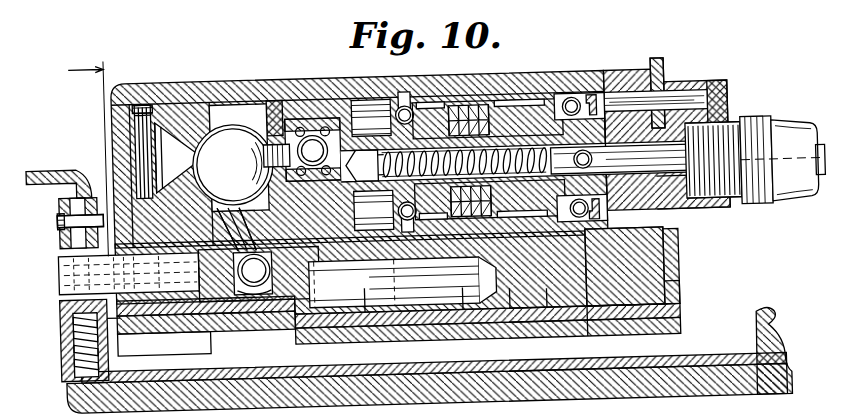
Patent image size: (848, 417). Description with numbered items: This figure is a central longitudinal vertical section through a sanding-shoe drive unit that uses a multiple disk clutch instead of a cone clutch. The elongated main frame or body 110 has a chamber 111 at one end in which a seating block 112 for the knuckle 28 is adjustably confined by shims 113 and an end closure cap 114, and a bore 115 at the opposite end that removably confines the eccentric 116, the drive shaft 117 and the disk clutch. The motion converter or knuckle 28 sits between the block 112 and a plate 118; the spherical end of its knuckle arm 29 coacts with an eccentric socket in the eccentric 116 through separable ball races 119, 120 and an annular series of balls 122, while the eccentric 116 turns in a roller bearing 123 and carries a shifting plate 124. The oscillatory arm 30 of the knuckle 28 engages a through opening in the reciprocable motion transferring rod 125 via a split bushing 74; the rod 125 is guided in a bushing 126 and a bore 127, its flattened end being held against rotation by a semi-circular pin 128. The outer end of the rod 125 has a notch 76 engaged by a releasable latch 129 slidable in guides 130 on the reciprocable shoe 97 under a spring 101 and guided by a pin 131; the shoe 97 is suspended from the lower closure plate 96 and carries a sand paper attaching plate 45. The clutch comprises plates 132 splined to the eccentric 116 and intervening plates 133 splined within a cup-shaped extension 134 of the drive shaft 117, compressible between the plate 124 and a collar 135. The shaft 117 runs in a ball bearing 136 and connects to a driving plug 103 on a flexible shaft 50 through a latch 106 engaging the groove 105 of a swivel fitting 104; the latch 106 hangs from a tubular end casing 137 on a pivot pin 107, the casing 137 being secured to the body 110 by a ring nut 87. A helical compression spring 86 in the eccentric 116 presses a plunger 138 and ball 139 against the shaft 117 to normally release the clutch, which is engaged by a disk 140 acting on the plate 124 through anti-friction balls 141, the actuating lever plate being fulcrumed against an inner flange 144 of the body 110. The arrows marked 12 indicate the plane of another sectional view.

The section line 12 is at (103, 195).
The knuckle 28 is at (233, 165).
The knuckle arm 29 is at (312, 150).
The oscillatory arm 30 is at (258, 254).
The sand paper attaching plate 45 is at (564, 378).
The flexible shaft 50 is at (800, 161).
The split bushing 74 is at (226, 292).
The notch 76 is at (62, 248).
The helical compression spring 86 is at (374, 210).
The ring nut 87 is at (662, 227).
The lower closure plate 96 is at (654, 310).
The reciprocable shoe 97 is at (790, 318).
The spring 101 is at (63, 320).
The driving plug 103 is at (758, 196).
The swivel fitting 104 is at (739, 195).
The groove 105 is at (678, 195).
The latch 106 is at (660, 69).
The pivot pin 107 is at (668, 102).
The main frame or body 110 is at (633, 276).
The chamber 111 is at (226, 95).
The seating block 112 is at (173, 94).
The shims 113 is at (135, 91).
The end closure cap 114 is at (129, 93).
The bore 115 is at (537, 284).
The eccentric 116 is at (320, 240).
The drive shaft 117 is at (613, 183).
The plate 118 is at (258, 93).
The ball race 119 is at (256, 103).
The ball race 120 is at (338, 98).
The balls 122 is at (322, 112).
The roller bearing 123 is at (277, 190).
The shifting plate 124 is at (414, 135).
The motion transferring rod 125 is at (321, 278).
The bushing 126 is at (167, 318).
The bore 127 is at (453, 281).
The semi-circular pin 128 is at (387, 280).
The releasable latch 129 is at (46, 150).
The guides 130 is at (78, 178).
The pin 131 is at (52, 200).
The parallel plates 132 is at (473, 102).
The parallel plates 133 is at (563, 94).
The cup-shaped extension 134 is at (578, 79).
The collar 135 is at (500, 283).
The ball bearing 136 is at (588, 308).
The tubular end casing 137 is at (720, 94).
The plunger 138 is at (569, 159).
The ball 139 is at (590, 157).
The disk 140 is at (390, 92).
The anti-friction balls 141 is at (371, 117).
The inner flange 144 is at (355, 279).